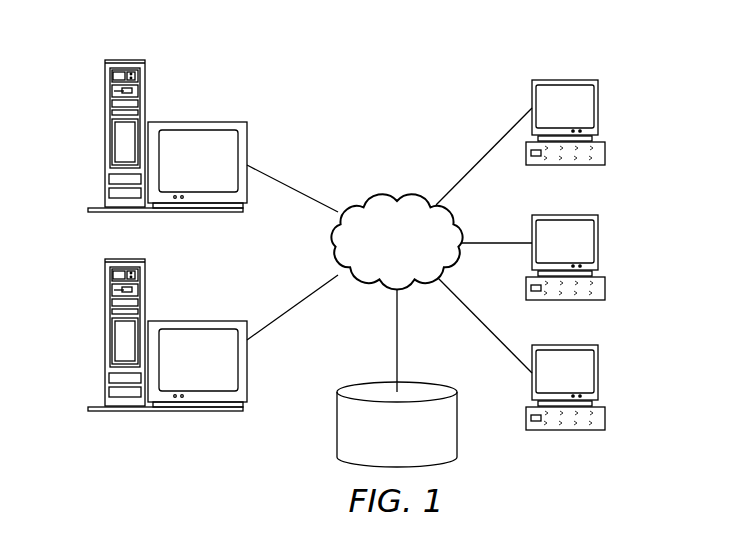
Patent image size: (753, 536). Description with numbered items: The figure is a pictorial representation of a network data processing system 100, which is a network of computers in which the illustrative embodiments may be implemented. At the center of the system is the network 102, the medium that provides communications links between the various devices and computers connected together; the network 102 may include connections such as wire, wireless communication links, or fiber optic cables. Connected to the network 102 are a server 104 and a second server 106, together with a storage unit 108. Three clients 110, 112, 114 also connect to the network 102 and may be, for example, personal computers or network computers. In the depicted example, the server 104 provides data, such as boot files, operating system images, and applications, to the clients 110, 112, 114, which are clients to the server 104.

The network data processing system 100 is at (449, 84).
The network 102 is at (390, 195).
The server 104 is at (105, 137).
The server 106 is at (105, 338).
The storage unit 108 is at (336, 438).
The client 110 is at (598, 101).
The client 112 is at (598, 237).
The client 114 is at (598, 376).